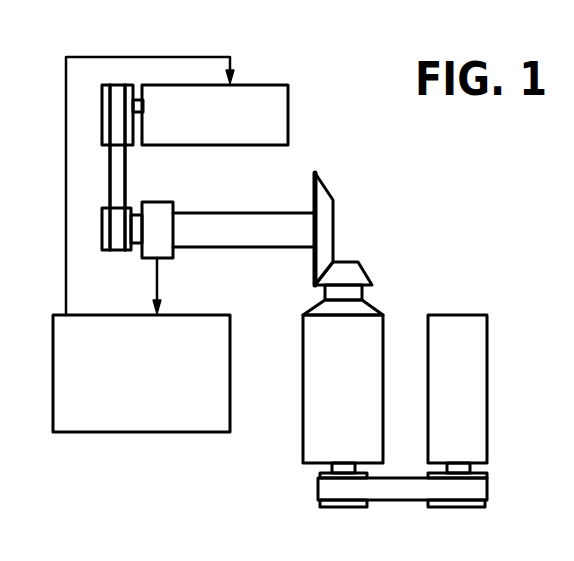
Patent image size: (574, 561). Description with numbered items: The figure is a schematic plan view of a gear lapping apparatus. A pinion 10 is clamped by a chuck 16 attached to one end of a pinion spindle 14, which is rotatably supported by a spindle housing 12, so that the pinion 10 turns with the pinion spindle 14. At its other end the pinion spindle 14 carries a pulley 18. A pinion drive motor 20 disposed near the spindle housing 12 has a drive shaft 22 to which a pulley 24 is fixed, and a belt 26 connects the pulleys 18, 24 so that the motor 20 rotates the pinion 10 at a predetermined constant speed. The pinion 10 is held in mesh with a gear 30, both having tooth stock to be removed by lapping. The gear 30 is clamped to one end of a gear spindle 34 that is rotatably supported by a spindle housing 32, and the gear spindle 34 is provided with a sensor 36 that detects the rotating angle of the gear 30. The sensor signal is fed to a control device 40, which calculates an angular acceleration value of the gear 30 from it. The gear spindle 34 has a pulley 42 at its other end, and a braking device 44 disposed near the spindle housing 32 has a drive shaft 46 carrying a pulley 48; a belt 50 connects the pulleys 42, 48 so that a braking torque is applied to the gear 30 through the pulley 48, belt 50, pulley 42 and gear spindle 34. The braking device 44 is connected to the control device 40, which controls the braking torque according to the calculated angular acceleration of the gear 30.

The pinion 10 is at (357, 275).
The spindle housing 12 is at (313, 360).
The pinion spindle 14 is at (330, 468).
The chuck 16 is at (353, 293).
The pulley 18 is at (345, 505).
The pinion drive motor 20 is at (472, 382).
The drive shaft 22 is at (470, 468).
The pulley 24 is at (470, 507).
The belt 26 is at (397, 490).
The gear 30 is at (325, 202).
The spindle housing 32 is at (268, 222).
The gear spindle 34 is at (135, 232).
The sensor 36 is at (162, 210).
The control device 40 is at (128, 413).
The pulley 42 is at (102, 232).
The braking device 44 is at (273, 95).
The drive shaft 46 is at (137, 103).
The pulley 48 is at (102, 107).
The belt 50 is at (117, 178).